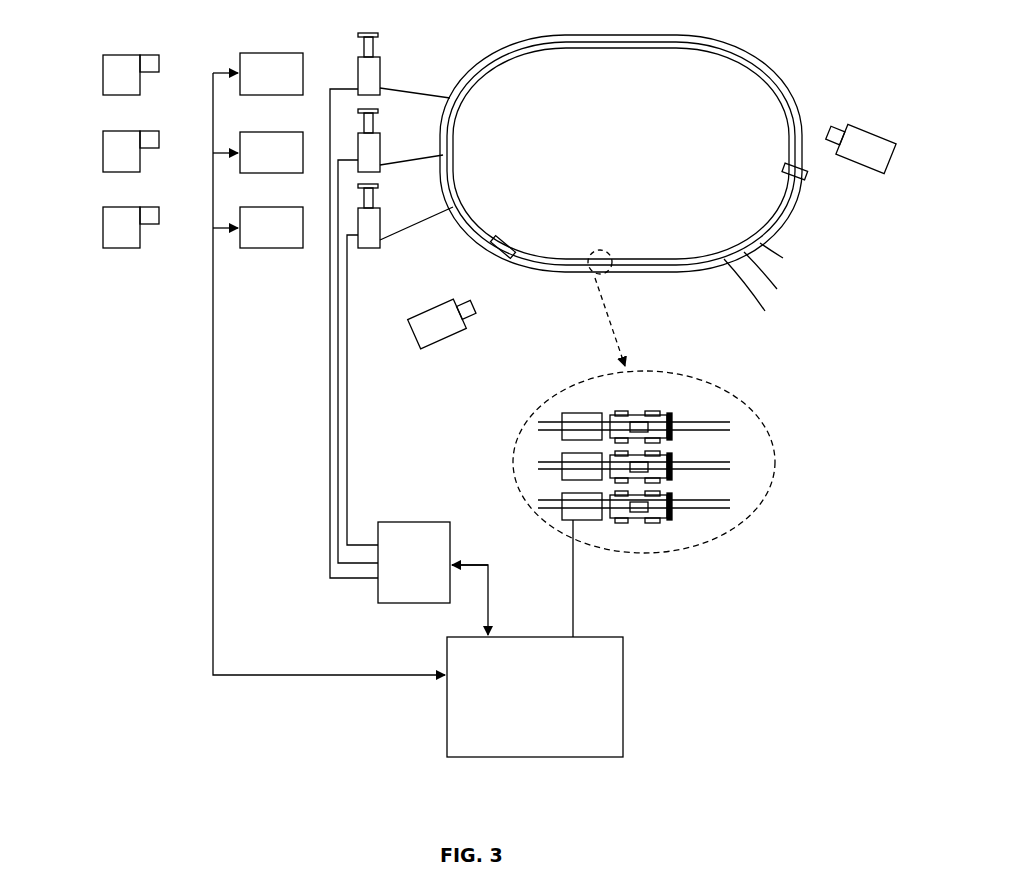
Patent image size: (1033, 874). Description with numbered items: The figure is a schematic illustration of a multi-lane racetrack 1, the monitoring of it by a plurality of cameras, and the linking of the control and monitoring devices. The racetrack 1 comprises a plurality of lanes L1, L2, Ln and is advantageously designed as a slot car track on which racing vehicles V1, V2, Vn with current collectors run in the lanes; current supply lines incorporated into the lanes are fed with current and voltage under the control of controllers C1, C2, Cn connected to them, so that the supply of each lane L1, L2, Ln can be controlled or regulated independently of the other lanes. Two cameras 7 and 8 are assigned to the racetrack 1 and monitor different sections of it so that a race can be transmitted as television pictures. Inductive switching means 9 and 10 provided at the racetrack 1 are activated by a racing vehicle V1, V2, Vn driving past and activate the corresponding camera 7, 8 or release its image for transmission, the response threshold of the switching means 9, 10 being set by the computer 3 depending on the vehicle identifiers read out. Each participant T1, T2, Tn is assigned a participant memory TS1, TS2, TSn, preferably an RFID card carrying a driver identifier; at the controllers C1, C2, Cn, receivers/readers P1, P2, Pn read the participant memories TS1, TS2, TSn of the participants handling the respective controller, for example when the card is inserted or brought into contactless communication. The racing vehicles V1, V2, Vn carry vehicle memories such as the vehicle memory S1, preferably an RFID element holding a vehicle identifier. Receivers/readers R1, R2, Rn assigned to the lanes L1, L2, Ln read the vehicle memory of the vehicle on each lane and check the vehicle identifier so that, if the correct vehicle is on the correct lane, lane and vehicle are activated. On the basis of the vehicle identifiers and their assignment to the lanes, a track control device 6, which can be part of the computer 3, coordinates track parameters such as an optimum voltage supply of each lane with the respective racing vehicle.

The racetrack 1 is at (802, 32).
The computer 3 is at (618, 714).
The track control device 6 is at (404, 528).
The camera 7 is at (418, 340).
The camera 8 is at (880, 137).
The inductive switching means 9 is at (505, 256).
The inductive switching means 10 is at (801, 179).
The participant T1 is at (103, 60).
The participant T2 is at (103, 138).
The participant Tn is at (103, 213).
The participant memory TS1 is at (150, 72).
The participant memory TS2 is at (150, 148).
The participant memory TSn is at (150, 225).
The receiver/reader P1 is at (262, 56).
The receiver/reader P2 is at (262, 136).
The receiver/reader Pn is at (260, 212).
The controller C1 is at (374, 72).
The controller C2 is at (374, 148).
The controller Cn is at (374, 223).
The lane L1 is at (763, 526).
The lane L2 is at (772, 279).
The lane Ln is at (755, 297).
The receiver/reader R1 is at (562, 514).
The receiver/reader R2 is at (562, 462).
The receiver/reader Rn is at (580, 414).
The racing vehicle V1 is at (668, 525).
The racing vehicle V2 is at (680, 478).
The racing vehicle Vn is at (680, 415).
The vehicle memory S1 is at (638, 520).